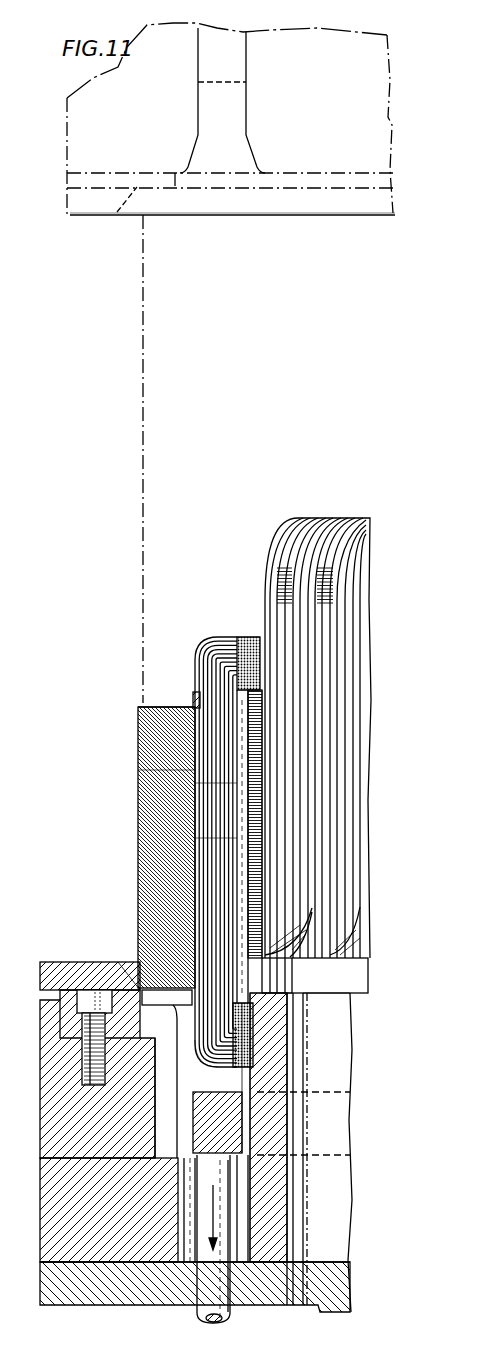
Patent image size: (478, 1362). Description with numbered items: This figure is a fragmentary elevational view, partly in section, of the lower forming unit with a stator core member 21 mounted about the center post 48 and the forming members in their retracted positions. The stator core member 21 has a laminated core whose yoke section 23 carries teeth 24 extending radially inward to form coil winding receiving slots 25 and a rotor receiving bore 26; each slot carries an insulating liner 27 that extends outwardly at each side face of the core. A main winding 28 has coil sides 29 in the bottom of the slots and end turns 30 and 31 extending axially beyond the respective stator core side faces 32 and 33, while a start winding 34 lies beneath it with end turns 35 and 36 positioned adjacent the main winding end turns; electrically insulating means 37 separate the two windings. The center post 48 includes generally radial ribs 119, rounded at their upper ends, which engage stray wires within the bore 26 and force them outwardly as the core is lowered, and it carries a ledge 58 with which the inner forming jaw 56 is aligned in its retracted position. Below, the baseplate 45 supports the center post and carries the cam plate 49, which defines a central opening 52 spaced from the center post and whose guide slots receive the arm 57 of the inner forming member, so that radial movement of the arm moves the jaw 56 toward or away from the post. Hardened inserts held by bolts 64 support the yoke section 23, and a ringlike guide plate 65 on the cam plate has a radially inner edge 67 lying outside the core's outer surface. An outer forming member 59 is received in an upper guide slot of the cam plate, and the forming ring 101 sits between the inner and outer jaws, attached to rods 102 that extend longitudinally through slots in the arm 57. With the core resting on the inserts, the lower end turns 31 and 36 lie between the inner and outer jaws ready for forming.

The outer forming member 59 is at (392, 124).
The forming ring 101 is at (228, 85).
The guide plate 65 is at (93, 215).
The center post 48 is at (335, 520).
The radial ribs 119 is at (330, 553).
The start winding 34 is at (245, 633).
The start winding end turn 35 is at (250, 637).
The electrically insulating means 37 is at (235, 638).
The main winding end turn 30 is at (205, 643).
The insulating liner 27 is at (195, 690).
The stator core side face 32 is at (157, 703).
The stator core member 21 is at (138, 737).
The yoke section 23 is at (157, 770).
The main winding 28 is at (212, 783).
The coil sides 29 is at (212, 838).
The rotor receiving bore 26 is at (263, 717).
The teeth 24 is at (255, 742).
The radially inner edge 67 is at (127, 960).
The bolts 64 is at (85, 1008).
The cam plate 49 is at (58, 1055).
The stator core side face 33 is at (163, 1005).
The central opening 52 is at (162, 1092).
The main winding end turn 31 is at (200, 1063).
The start winding end turn 36 is at (252, 1050).
The coil winding receiving slots 25 is at (250, 1003).
The ledge 58 is at (355, 973).
The inner forming jaw 56 is at (275, 1210).
The arm 57 is at (62, 1207).
The baseplate 45 is at (110, 1288).
The rods 102 is at (210, 1300).